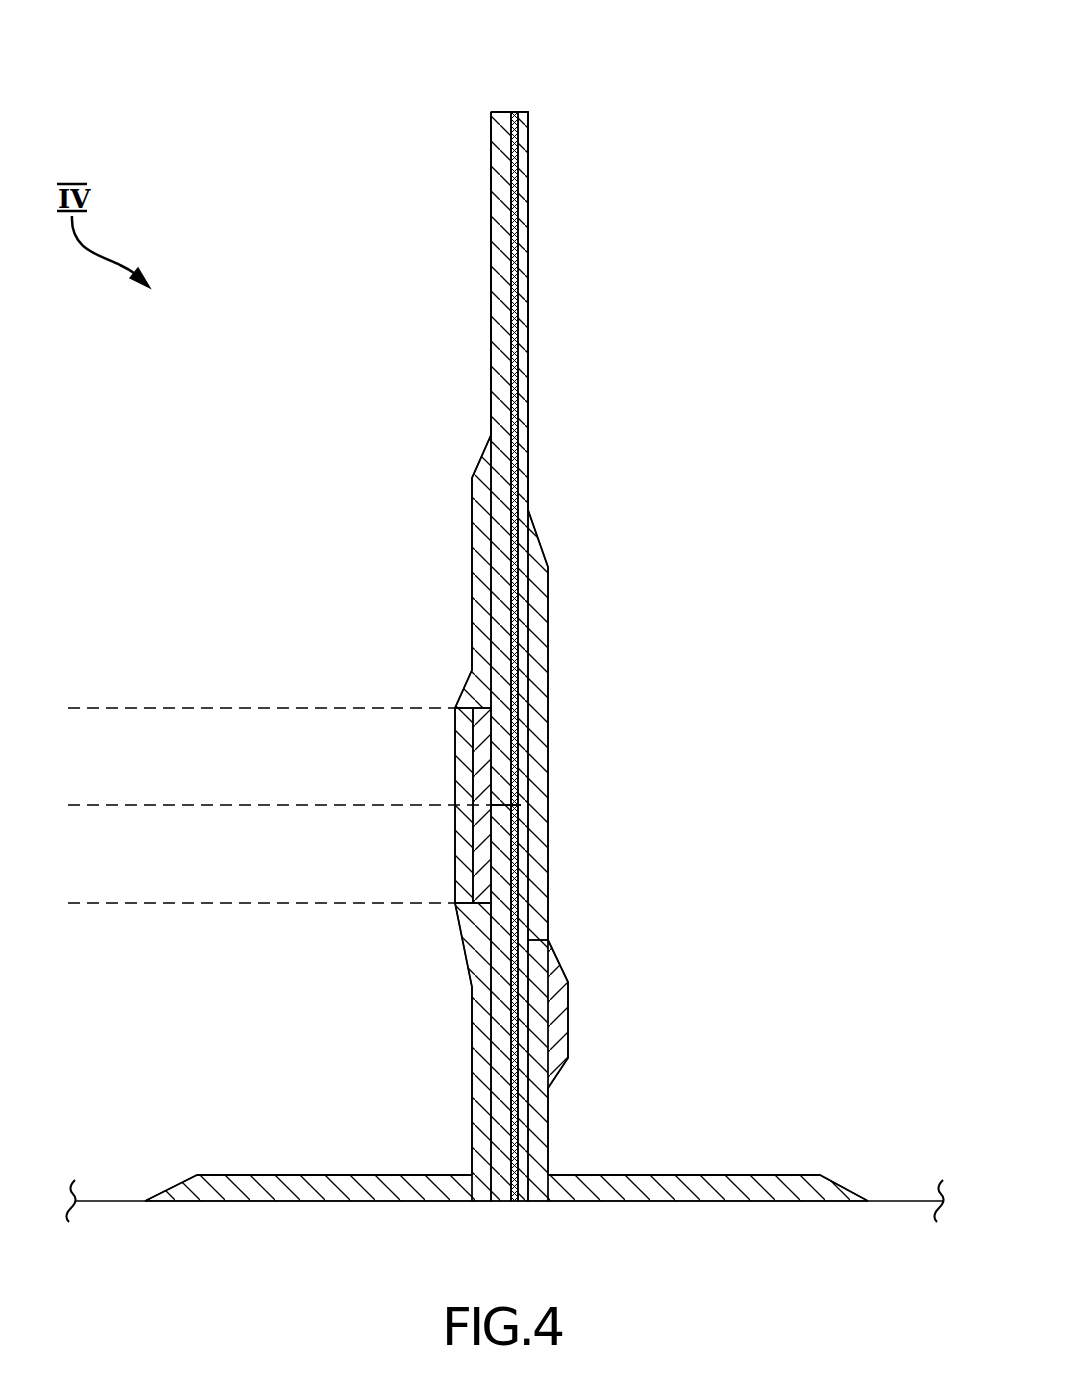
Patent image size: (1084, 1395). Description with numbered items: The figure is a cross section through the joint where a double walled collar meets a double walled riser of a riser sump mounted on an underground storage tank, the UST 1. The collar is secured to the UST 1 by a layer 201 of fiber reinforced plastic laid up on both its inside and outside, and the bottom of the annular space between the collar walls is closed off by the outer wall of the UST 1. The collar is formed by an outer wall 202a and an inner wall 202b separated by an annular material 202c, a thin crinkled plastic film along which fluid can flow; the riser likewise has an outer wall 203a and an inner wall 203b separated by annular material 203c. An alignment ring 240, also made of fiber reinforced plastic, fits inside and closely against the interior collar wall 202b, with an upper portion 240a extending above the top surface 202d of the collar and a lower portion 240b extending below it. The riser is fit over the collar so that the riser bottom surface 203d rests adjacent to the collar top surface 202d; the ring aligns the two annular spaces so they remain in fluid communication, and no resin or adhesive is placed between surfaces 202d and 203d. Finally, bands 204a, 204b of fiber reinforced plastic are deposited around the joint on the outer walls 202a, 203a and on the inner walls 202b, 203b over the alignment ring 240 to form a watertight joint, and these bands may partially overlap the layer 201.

The UST 1 is at (896, 1201).
The layer of FRP 201 is at (465, 1175).
The outer wall of collar 202a is at (532, 1050).
The inner wall of collar 202b is at (500, 1050).
The annular material of collar 202c is at (522, 1098).
The top surface of collar 202d is at (521, 810).
The outer wall of riser 203a is at (527, 340).
The inner wall of riser 203b is at (497, 300).
The annular material of riser 203c is at (516, 110).
The bottom surface of riser 203d is at (522, 805).
The outer band of FRP 204a is at (551, 680).
The inner band of FRP 204b is at (472, 552).
The alignment ring 240 is at (379, 745).
The upper portion of alignment ring 240a is at (478, 775).
The lower portion of alignment ring 240b is at (472, 752).